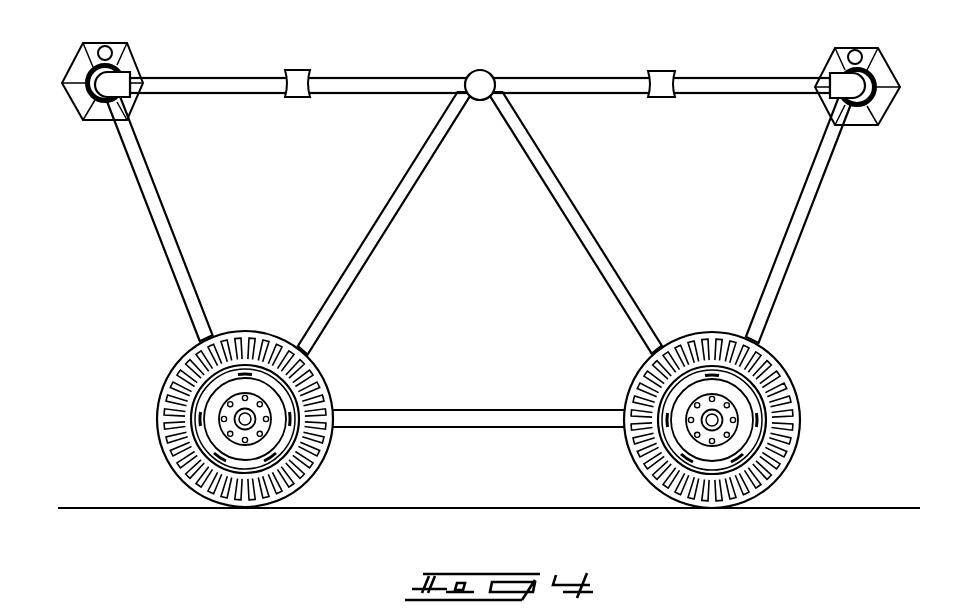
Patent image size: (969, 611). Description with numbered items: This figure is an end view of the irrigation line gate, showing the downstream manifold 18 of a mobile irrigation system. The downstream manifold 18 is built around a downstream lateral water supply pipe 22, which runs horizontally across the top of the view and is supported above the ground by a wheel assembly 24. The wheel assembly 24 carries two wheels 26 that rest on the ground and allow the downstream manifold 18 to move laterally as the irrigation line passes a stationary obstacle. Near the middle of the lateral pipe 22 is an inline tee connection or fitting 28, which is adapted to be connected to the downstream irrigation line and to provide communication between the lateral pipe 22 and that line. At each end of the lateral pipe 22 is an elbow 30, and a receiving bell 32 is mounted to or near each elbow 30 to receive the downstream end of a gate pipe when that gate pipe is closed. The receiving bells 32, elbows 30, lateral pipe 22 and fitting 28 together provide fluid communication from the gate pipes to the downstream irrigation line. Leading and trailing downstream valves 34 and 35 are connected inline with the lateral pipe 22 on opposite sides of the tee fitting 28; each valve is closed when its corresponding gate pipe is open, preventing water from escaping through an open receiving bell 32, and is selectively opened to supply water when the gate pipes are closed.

The downstream manifold 18 is at (325, 65).
The downstream lateral water supply pipe 22 is at (594, 78).
The wheel assembly 24 is at (618, 261).
The wheels 26 is at (792, 446).
The inline tee connection or fitting 28 is at (474, 72).
The elbow 30 is at (122, 80).
The receiving bell 32 is at (64, 62).
The leading downstream valve 34 is at (300, 70).
The trailing downstream valve 35 is at (665, 72).